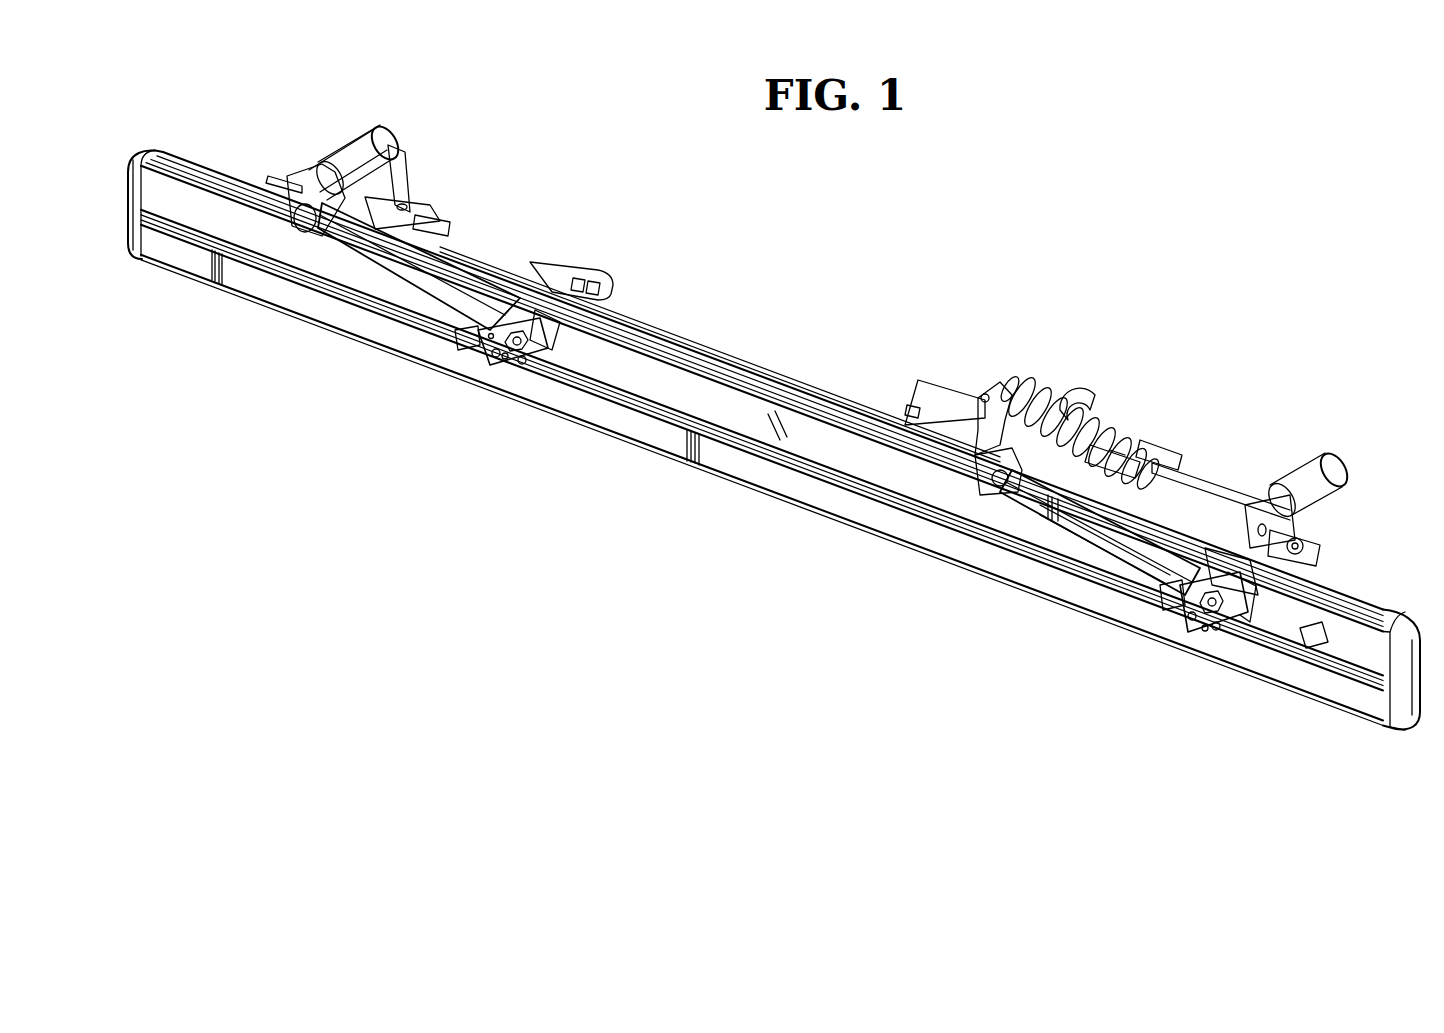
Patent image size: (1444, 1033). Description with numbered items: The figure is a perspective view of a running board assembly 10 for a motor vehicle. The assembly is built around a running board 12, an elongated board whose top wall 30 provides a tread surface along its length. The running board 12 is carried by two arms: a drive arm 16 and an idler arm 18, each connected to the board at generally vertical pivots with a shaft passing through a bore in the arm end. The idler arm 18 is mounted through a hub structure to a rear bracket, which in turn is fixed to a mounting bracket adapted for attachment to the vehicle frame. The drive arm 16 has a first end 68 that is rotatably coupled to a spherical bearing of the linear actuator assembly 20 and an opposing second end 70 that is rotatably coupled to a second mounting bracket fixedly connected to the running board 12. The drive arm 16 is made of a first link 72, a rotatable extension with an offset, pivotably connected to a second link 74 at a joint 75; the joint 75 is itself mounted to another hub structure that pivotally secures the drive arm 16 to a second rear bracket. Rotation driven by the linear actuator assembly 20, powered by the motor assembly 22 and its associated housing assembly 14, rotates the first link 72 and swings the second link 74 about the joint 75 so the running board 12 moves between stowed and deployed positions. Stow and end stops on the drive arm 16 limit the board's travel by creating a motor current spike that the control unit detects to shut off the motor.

The running board assembly 10 is at (628, 508).
The running board 12 is at (785, 505).
The housing assembly 14 is at (1250, 490).
The drive arm 16 is at (1115, 540).
The idler arm 18 is at (390, 265).
The linear actuator assembly 20 is at (1023, 362).
The motor assembly 22 is at (1345, 508).
The top wall 30 is at (1416, 644).
The first end 68 is at (985, 385).
The second end 70 is at (1302, 548).
The first link 72 is at (1000, 460).
The second link 74 is at (1146, 568).
The joint 75 is at (1000, 486).